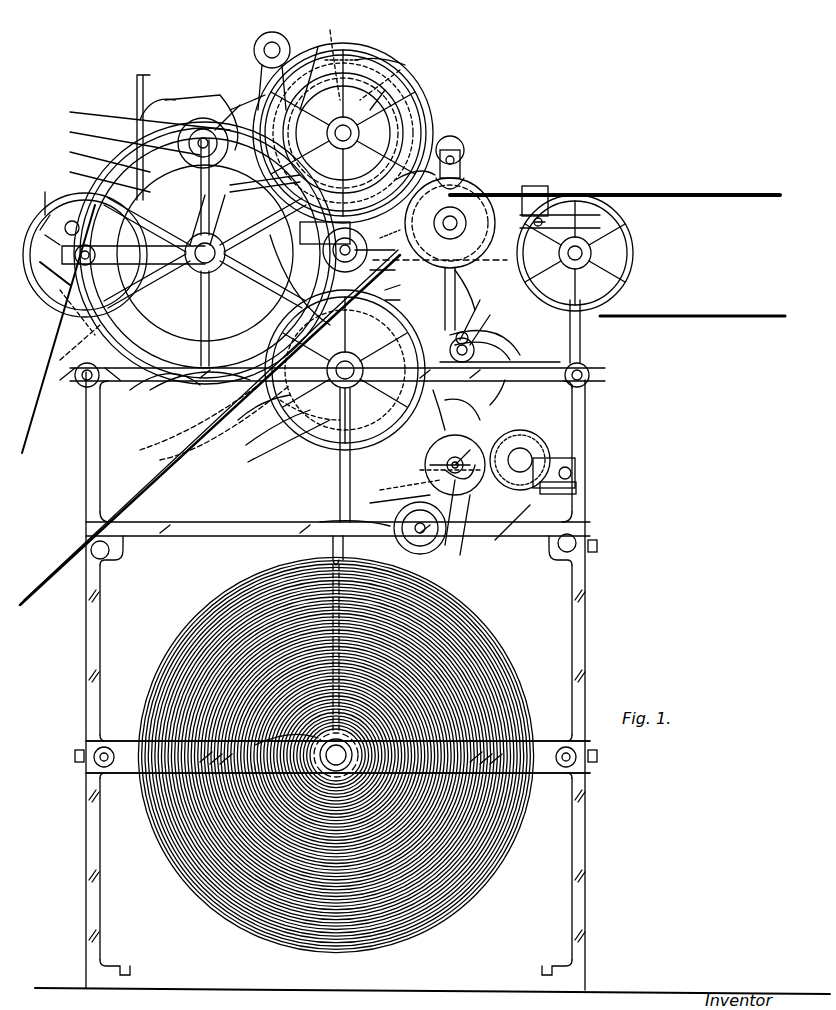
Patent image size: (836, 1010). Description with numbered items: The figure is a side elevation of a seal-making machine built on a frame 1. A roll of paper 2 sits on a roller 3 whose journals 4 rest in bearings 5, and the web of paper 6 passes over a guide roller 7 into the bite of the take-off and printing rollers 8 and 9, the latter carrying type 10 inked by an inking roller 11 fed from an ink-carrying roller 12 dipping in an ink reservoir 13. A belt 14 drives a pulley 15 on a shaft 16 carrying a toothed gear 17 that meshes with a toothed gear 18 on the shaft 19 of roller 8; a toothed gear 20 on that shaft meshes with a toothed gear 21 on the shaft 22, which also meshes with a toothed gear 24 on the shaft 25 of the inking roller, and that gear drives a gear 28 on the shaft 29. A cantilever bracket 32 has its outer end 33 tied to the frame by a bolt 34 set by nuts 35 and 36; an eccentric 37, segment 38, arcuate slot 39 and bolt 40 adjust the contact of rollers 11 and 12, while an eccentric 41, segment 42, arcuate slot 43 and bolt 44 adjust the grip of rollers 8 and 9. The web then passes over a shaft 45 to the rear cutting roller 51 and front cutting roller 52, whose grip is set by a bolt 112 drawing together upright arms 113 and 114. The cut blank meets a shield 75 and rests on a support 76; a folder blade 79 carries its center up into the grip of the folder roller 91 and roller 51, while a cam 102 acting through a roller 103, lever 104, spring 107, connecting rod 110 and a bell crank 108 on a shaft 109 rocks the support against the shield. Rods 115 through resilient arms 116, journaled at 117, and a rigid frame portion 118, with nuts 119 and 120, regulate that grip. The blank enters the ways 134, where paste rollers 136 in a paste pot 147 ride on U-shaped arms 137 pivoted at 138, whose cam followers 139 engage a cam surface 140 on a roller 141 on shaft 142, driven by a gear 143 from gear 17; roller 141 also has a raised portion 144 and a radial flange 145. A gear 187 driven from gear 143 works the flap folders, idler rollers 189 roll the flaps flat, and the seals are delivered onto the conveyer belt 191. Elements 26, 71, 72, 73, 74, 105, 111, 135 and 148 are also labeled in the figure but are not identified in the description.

The frame 1 is at (590, 620).
The roll of paper 2 is at (182, 632).
The roller 3 is at (245, 745).
The journals 4 is at (352, 749).
The bearings 5 is at (314, 749).
The web of paper 6 is at (400, 412).
The guide roller 7 is at (330, 520).
The take-off roller 8 is at (265, 433).
The printing roller 9 is at (505, 340).
The type 10 is at (450, 410).
The inking roller 11 is at (455, 461).
The ink-carrying roller 12 is at (530, 448).
The ink reservoir 13 is at (505, 531).
The belt 14 is at (70, 440).
The pulley 15 is at (150, 395).
The shaft 16 is at (100, 200).
The toothed gear 17 is at (330, 262).
The toothed gear 18 is at (252, 418).
The shaft 19 is at (345, 370).
The toothed gear 20 is at (272, 447).
The toothed gear 21 is at (401, 286).
The shaft 22 is at (505, 340).
The toothed gear 24 is at (473, 408).
The shaft 25 is at (402, 298).
The wheel 26 is at (400, 510).
The gear 28 is at (545, 455).
The shaft 29 is at (560, 482).
The bracket 32 is at (465, 490).
The outer end 33 is at (420, 470).
The bolt 34 is at (410, 440).
The nut 35 is at (380, 490).
The nut 36 is at (508, 388).
The eccentric 37 is at (387, 500).
The segment 38 is at (450, 523).
The arcuate slot 39 is at (457, 539).
The bolt 40 is at (510, 430).
The eccentric 41 is at (481, 290).
The segment 42 is at (486, 314).
The arcuate slot 43 is at (494, 324).
The bolt 44 is at (470, 262).
The shaft 45 is at (394, 260).
The rear cutting roller 51 is at (36, 430).
The front cutting roller 52 is at (60, 290).
The arm 71 is at (35, 195).
The link 72 is at (60, 350).
The escape wheel 73 is at (38, 270).
The pivot 74 is at (60, 275).
The shield 75 is at (139, 112).
The support 76 is at (122, 136).
The folder blade 79 is at (70, 333).
The folder roller 91 is at (182, 90).
The cam 102 is at (420, 75).
The roller 103 is at (250, 95).
The lever 104 is at (362, 131).
The pawl 105 is at (375, 268).
The spring 107 is at (160, 458).
The bell crank 108 is at (175, 395).
The shaft 109 is at (185, 418).
The connecting rod 110 is at (300, 282).
The arm 111 is at (90, 156).
The bolt 112 is at (90, 176).
The upright arm 113 is at (85, 320).
The upright arm 114 is at (50, 366).
The rods 115 is at (200, 118).
The arms 116 is at (224, 108).
The journal 117 is at (148, 110).
The frame portion 118 is at (205, 253).
The nuts 119 is at (201, 220).
The nuts 120 is at (265, 179).
The ways 134 is at (405, 110).
The post 135 is at (137, 110).
The paste rollers 136 is at (400, 100).
The U-shaped arm 137 is at (358, 45).
The pivot 138 is at (325, 232).
The cam follower 139 is at (390, 75).
The cam surface 140 is at (330, 20).
The roller 141 is at (335, 35).
The shaft 142 is at (400, 50).
The gear 143 is at (398, 90).
The raised portion 144 is at (280, 22).
The radial flange 145 is at (410, 62).
The paste pot 147 is at (389, 246).
The arm 148 is at (420, 150).
The gear 187 is at (530, 186).
The idler rollers 189 is at (464, 150).
The conveyer belt 191 is at (648, 192).